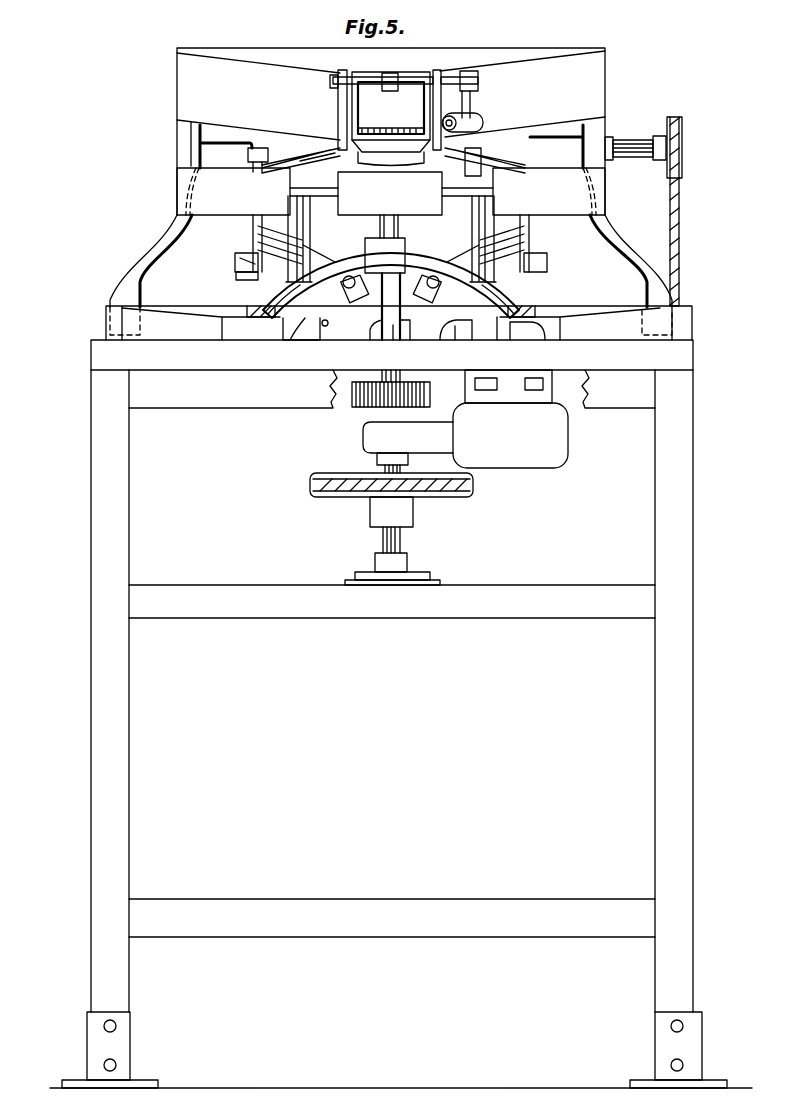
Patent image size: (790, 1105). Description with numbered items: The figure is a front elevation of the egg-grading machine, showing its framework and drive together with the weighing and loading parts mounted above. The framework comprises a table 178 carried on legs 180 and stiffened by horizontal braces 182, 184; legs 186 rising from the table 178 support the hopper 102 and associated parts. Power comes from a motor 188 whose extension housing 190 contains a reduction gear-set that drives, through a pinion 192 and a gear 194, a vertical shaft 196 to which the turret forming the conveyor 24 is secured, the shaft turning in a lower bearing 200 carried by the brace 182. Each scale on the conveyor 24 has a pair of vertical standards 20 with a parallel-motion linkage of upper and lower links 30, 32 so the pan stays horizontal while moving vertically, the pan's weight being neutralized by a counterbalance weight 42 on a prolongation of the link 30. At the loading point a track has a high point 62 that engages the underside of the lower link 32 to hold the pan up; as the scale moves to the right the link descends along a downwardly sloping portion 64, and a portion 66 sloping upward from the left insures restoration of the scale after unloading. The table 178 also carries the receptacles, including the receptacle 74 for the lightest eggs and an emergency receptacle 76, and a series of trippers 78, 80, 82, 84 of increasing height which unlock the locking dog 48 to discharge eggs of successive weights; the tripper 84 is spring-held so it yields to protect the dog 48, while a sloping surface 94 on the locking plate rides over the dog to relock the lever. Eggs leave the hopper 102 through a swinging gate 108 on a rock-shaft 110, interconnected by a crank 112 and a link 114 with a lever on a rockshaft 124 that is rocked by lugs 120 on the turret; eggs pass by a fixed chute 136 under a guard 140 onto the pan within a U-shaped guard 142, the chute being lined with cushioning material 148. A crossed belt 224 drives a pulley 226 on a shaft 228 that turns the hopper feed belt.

The vertical standards 20 is at (313, 235).
The conveyor 24 is at (406, 230).
The upper link 30 is at (278, 226).
The lower link 32 is at (304, 247).
The weight 42 is at (355, 300).
The locking dog 48 is at (233, 262).
The high point 62 is at (404, 263).
The downwardly sloping portion 64 is at (493, 302).
The upwardly sloping portion 66 is at (287, 300).
The receptacle 74 is at (110, 322).
The emergency receptacle 76 is at (688, 322).
The tripper 78 is at (535, 338).
The tripper 80 is at (452, 337).
The tripper 82 is at (378, 337).
The tripper 84 is at (300, 332).
The sloping surface 94 is at (240, 278).
The hopper 102 is at (597, 93).
The swinging gate 108 is at (415, 72).
The rock-shaft 110 is at (383, 70).
The crank 112 is at (463, 68).
The link 114 is at (478, 82).
The lugs 120 is at (262, 148).
The rockshaft 124 is at (484, 126).
The fixed chute 136 is at (396, 134).
The guard 140 is at (470, 110).
The guard 142 is at (618, 192).
The cushioning material 148 is at (250, 155).
The table 178 is at (100, 352).
The legs 180 is at (100, 478).
The horizontal brace 182 is at (352, 580).
The horizontal brace 184 is at (512, 605).
The legs 186 is at (152, 217).
The motor 188 is at (550, 438).
The extension housing 190 is at (378, 440).
The pinion 192 is at (372, 408).
The gear 194 is at (355, 396).
The vertical shaft 196 is at (401, 543).
The lower bearing 200 is at (408, 565).
The crossed belt 224 is at (683, 243).
The pulley 226 is at (685, 152).
The shaft 228 is at (633, 142).